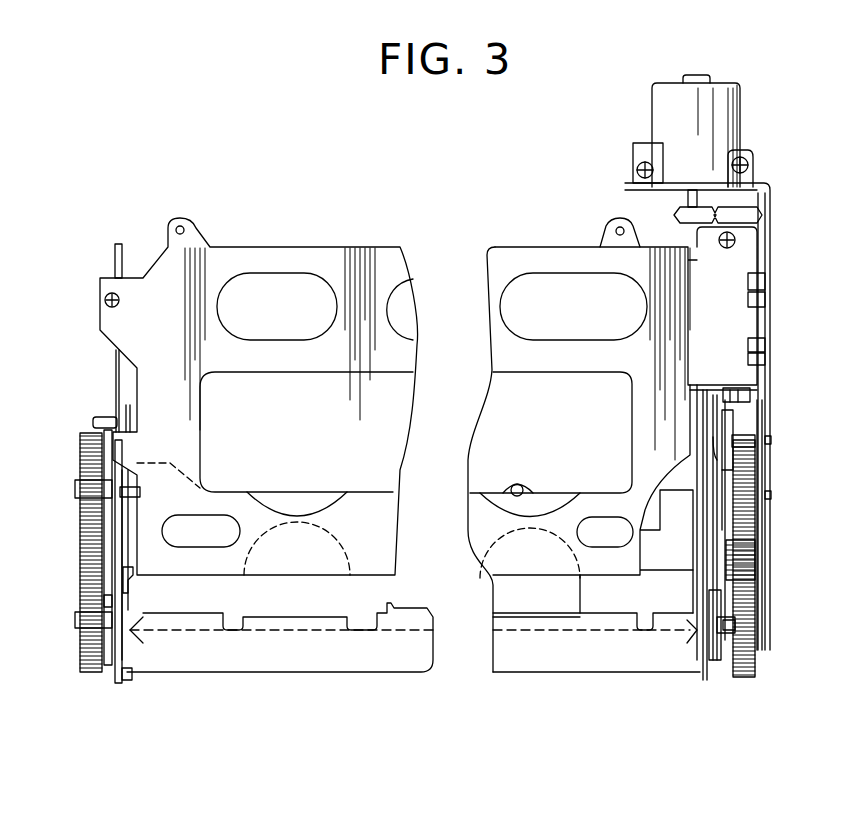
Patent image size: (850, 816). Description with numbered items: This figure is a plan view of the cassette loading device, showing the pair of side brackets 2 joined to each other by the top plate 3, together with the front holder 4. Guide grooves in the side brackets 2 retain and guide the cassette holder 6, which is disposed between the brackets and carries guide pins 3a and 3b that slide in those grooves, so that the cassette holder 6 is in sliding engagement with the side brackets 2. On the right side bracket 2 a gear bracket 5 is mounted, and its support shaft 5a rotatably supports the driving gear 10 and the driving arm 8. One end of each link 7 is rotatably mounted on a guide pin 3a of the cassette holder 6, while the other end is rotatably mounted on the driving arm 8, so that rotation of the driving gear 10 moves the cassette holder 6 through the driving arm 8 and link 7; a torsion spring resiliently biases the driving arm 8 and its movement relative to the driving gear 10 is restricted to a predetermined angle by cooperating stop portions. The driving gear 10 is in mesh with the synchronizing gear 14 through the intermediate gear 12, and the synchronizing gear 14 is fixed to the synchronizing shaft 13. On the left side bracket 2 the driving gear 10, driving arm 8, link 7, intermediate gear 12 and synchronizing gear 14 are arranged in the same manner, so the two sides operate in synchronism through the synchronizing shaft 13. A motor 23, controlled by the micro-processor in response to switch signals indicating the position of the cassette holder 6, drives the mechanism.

The side bracket 2 is at (113, 665).
The top plate 3 is at (333, 246).
The guide pin 3a is at (110, 600).
The guide pin 3b is at (106, 418).
The front holder 4 is at (600, 674).
The gear bracket 5 is at (762, 562).
The support shaft 5a is at (755, 487).
The cassette holder 6 is at (128, 575).
The link 7 is at (107, 585).
The driving arm 8 is at (107, 520).
The driving gear 10 is at (80, 446).
The intermediate gear 12 is at (80, 564).
The synchronizing shaft 13 is at (715, 640).
The synchronizing gear 14 is at (80, 642).
The motor 23 is at (653, 120).